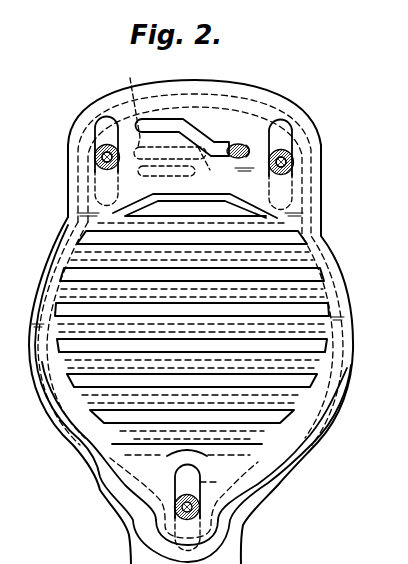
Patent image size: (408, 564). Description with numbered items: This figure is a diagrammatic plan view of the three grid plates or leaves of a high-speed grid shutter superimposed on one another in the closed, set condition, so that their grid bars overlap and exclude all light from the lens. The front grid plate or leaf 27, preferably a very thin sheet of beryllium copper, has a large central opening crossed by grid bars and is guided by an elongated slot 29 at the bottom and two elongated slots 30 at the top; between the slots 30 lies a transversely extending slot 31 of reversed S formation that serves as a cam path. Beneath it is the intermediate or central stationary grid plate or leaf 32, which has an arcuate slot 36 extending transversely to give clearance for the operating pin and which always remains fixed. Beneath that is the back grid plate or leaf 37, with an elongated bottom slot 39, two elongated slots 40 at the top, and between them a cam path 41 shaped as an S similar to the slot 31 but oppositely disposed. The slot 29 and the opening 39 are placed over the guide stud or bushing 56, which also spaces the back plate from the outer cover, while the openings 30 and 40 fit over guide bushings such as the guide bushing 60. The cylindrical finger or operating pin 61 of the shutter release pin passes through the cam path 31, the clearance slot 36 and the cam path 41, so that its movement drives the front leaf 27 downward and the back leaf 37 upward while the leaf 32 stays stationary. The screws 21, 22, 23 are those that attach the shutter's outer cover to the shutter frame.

The screw 21 is at (179, 508).
The screw 22 is at (100, 158).
The screw 23 is at (292, 163).
The front grid plate or leaf 27 is at (329, 402).
The elongated slot 29 is at (177, 480).
The elongated slots 30 is at (107, 119).
The transversely extending slot (cam path) 31 is at (167, 119).
The intermediate or central stationary grid plate or leaf 32 is at (294, 462).
The arcuate slot 36 is at (128, 104).
The back grid plate or leaf 37 is at (277, 483).
The elongated bottom slot 39 is at (175, 547).
The elongated slots 40 is at (93, 195).
The cam path 41 is at (177, 168).
The bushing (guide stud) 56 is at (200, 507).
The guide bushing 60 is at (94, 166).
The cylindrical finger (operating pin) 61 is at (236, 145).